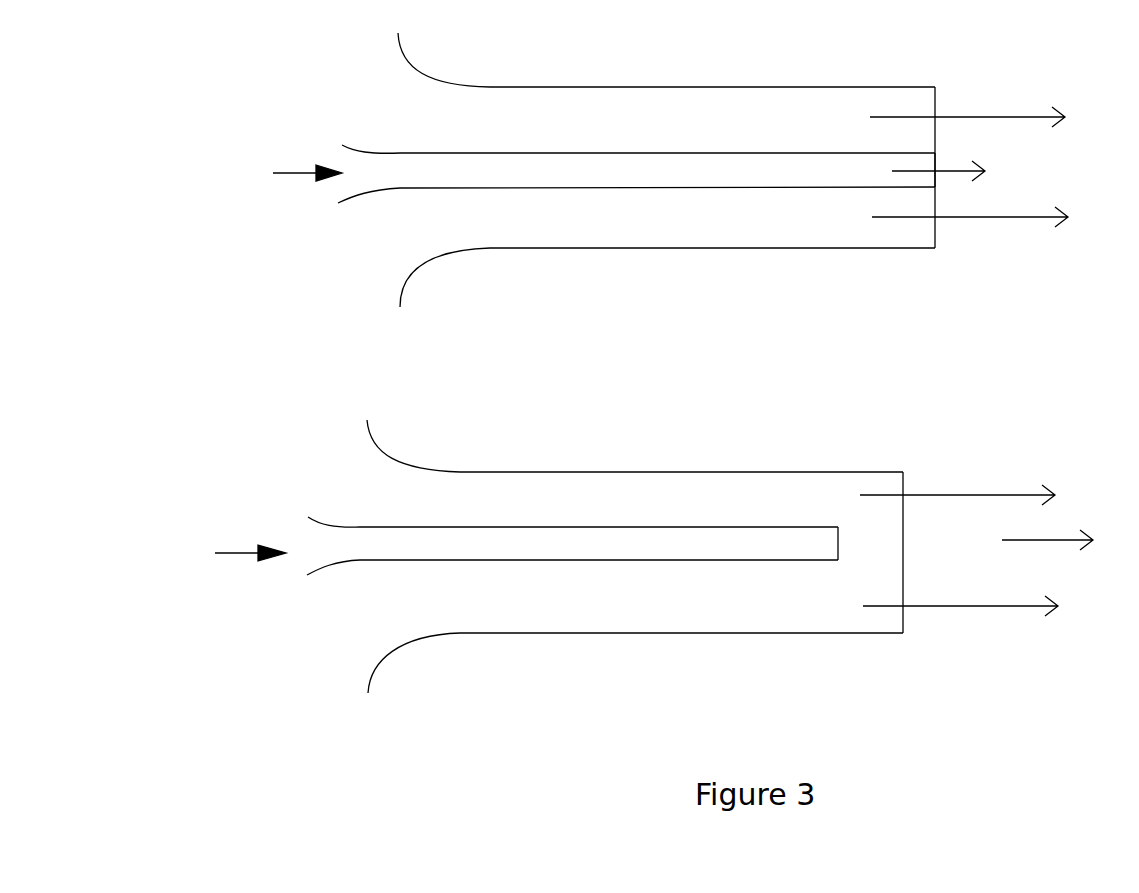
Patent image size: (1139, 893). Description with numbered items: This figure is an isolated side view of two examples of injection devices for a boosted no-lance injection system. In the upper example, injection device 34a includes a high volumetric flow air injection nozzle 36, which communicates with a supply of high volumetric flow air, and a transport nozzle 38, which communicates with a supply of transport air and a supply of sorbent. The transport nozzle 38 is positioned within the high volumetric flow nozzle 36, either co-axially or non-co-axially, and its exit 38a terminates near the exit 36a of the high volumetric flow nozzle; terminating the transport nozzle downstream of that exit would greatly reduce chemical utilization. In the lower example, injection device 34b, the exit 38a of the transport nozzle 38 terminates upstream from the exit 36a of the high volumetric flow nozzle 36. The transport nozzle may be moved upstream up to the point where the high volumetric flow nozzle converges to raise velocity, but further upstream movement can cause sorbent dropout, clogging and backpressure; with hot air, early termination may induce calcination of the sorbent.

The injection device 34a is at (283, 174).
The injection device 34b is at (226, 554).
The high volumetric flow air injection nozzle 36 is at (606, 95).
The exit of the high volumetric flow nozzle 36a is at (937, 100).
The transport nozzle 38 is at (706, 163).
The exit of transport nozzle 38a is at (938, 155).